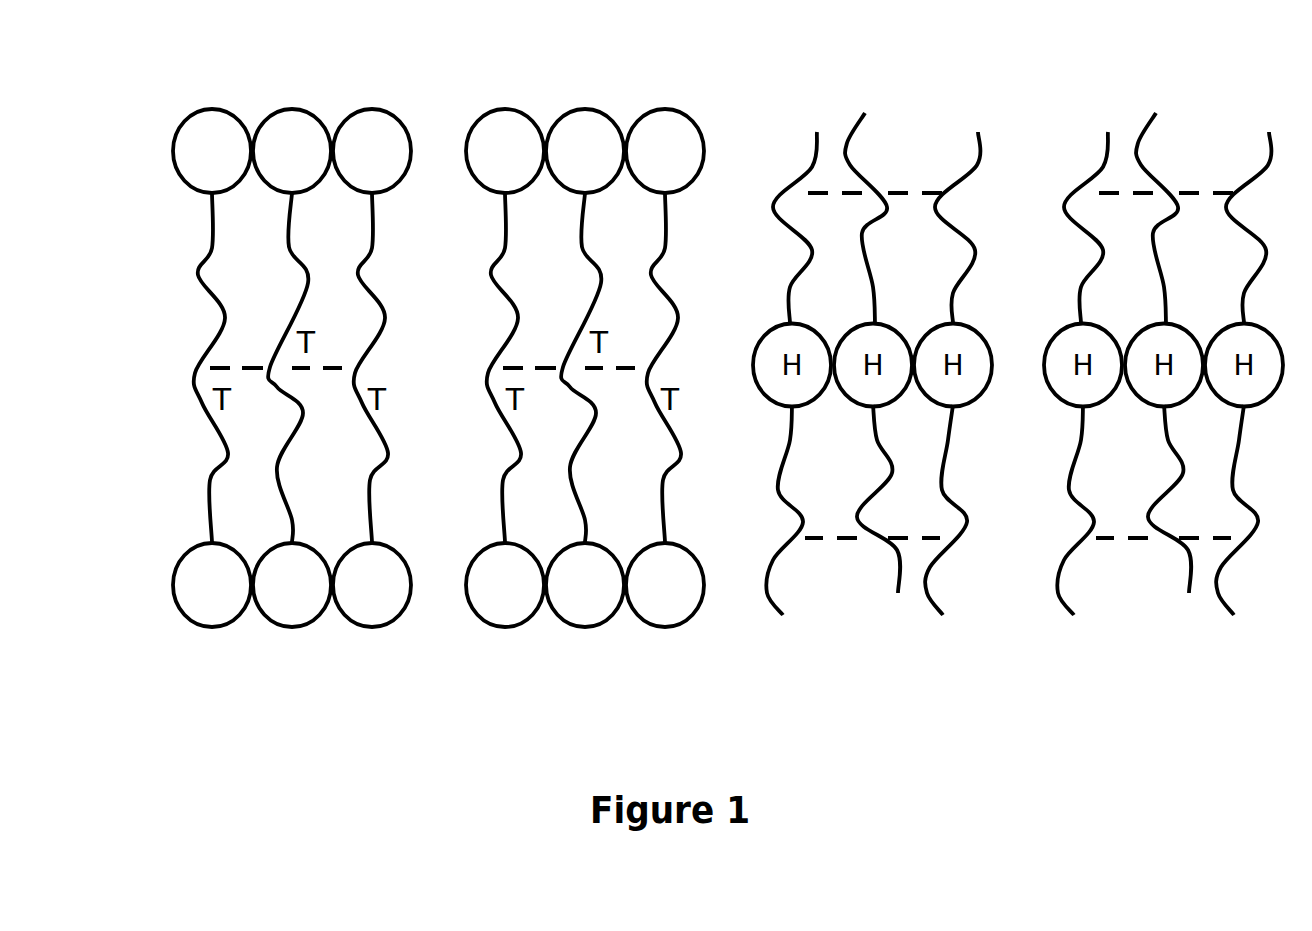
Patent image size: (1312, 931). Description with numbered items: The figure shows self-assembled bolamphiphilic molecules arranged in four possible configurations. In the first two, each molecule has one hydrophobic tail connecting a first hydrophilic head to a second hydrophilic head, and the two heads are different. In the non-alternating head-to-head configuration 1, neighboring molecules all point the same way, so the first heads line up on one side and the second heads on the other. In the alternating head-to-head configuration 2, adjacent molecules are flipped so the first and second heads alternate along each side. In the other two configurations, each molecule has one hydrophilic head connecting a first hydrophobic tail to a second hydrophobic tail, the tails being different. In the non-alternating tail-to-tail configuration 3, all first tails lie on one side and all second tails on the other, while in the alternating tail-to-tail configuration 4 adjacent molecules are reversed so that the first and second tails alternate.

The non-alternating head-to-head configuration 1 is at (230, 328).
The alternating head-to-head configuration 2 is at (523, 328).
The non-alternating tail-to-tail configuration 3 is at (819, 322).
The alternating tail-to-tail configuration 4 is at (1114, 322).